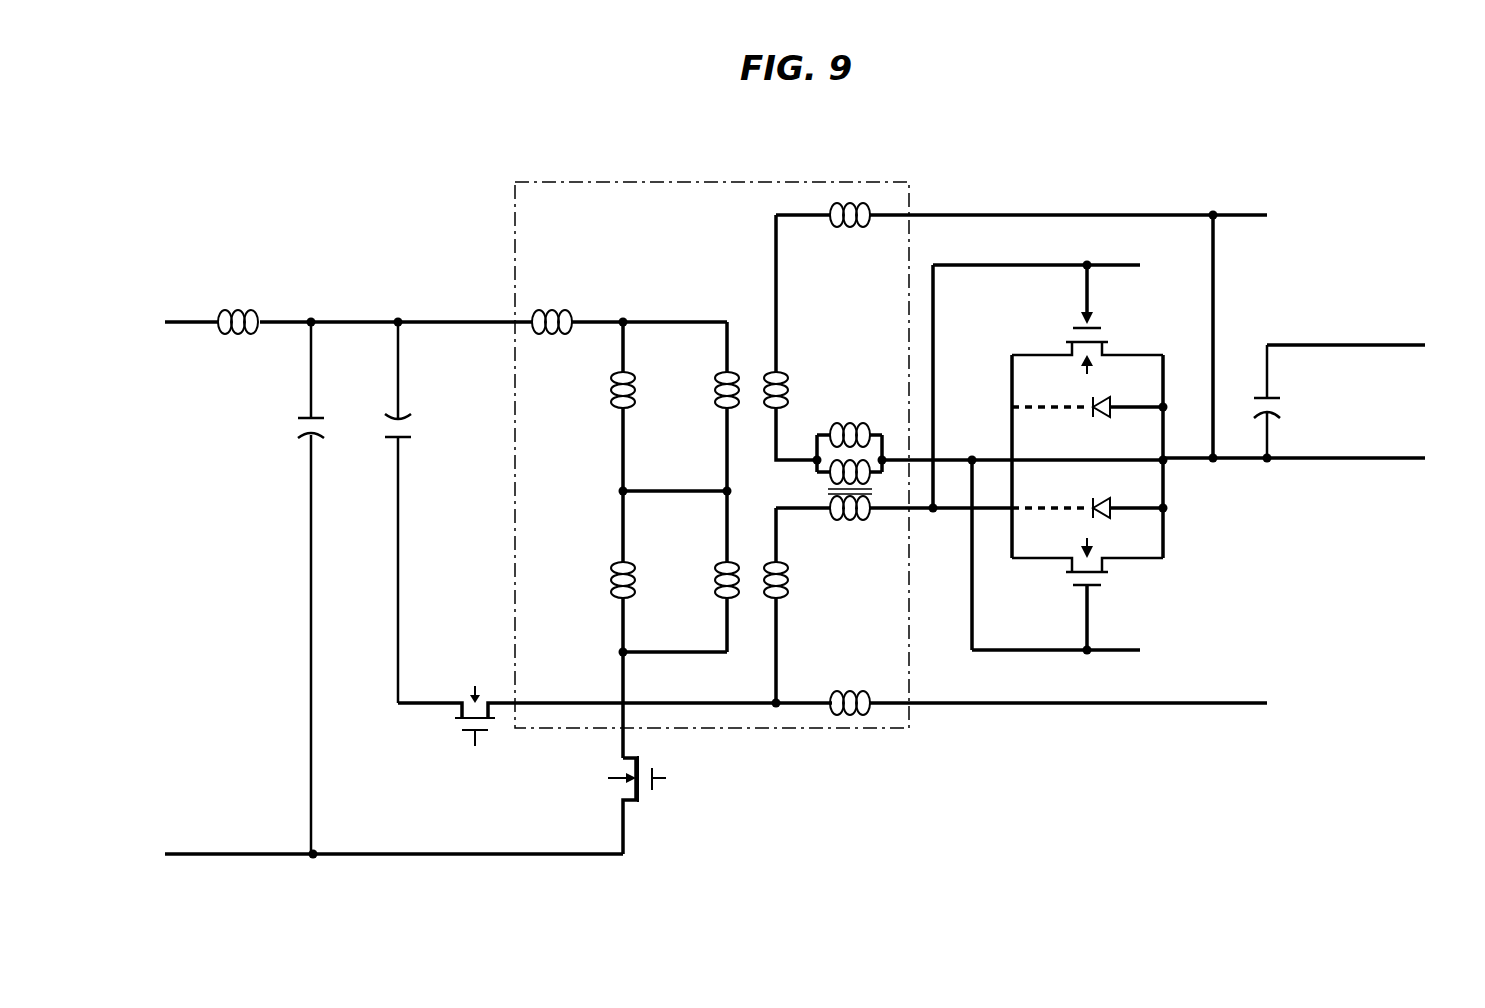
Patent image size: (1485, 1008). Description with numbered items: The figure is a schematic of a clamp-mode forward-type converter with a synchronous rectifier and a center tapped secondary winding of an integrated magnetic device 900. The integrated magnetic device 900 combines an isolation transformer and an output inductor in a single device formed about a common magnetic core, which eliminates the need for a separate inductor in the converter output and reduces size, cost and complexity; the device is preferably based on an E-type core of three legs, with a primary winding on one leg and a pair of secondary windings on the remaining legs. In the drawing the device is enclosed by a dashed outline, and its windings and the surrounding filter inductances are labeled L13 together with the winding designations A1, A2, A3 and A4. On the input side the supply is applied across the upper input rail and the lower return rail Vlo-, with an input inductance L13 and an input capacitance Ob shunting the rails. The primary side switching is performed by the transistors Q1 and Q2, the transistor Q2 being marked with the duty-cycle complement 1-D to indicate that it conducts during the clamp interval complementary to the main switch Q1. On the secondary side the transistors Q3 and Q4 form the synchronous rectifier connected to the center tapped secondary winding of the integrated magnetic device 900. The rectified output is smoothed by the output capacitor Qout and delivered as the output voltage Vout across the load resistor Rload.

The integrated magnetic device 900 is at (640, 233).
The inductor L13 is at (544, 459).
The inductor winding A1 is at (708, 406).
The inductor winding A2 is at (708, 571).
The inductor winding A3 is at (799, 605).
The inductor winding A4 is at (780, 337).
The transistor Q1 is at (654, 805).
The transistor Q2 is at (587, 699).
The transistor Q3 is at (1067, 557).
The transistor Q4 is at (1048, 385).
The capacitor Ob is at (418, 512).
The output capacitor Qout is at (1292, 401).
The load resistor Rload is at (1446, 405).
The output voltage Vout is at (1314, 405).
The negative input voltage Vlo- is at (364, 859).
The duty cycle complement 1-D is at (475, 765).